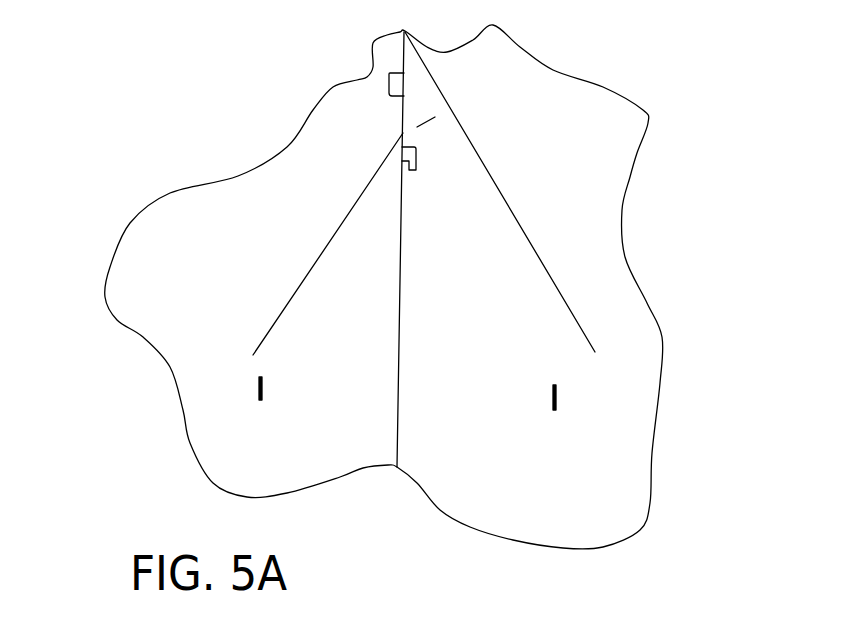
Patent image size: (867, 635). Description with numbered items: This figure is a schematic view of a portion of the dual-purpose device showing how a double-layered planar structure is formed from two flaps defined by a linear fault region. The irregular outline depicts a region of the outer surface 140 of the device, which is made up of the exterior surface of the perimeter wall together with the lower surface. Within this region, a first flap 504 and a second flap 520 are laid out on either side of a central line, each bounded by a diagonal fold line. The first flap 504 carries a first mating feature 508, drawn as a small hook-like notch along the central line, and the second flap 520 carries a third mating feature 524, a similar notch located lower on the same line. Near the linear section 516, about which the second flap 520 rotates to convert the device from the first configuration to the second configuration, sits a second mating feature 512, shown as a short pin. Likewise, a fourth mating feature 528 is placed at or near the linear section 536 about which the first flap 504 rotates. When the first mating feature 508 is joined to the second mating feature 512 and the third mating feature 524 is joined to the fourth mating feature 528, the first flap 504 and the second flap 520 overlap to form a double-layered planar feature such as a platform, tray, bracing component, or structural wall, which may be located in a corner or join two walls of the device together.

The outer surface 140 is at (608, 222).
The first flap 504 is at (485, 232).
The first mating feature 508 is at (388, 95).
The second mating feature 512 is at (260, 387).
The linear section 516 is at (338, 370).
The second flap 520 is at (330, 305).
The third mating feature 524 is at (417, 170).
The fourth mating feature 528 is at (552, 392).
The linear section 536 is at (490, 367).